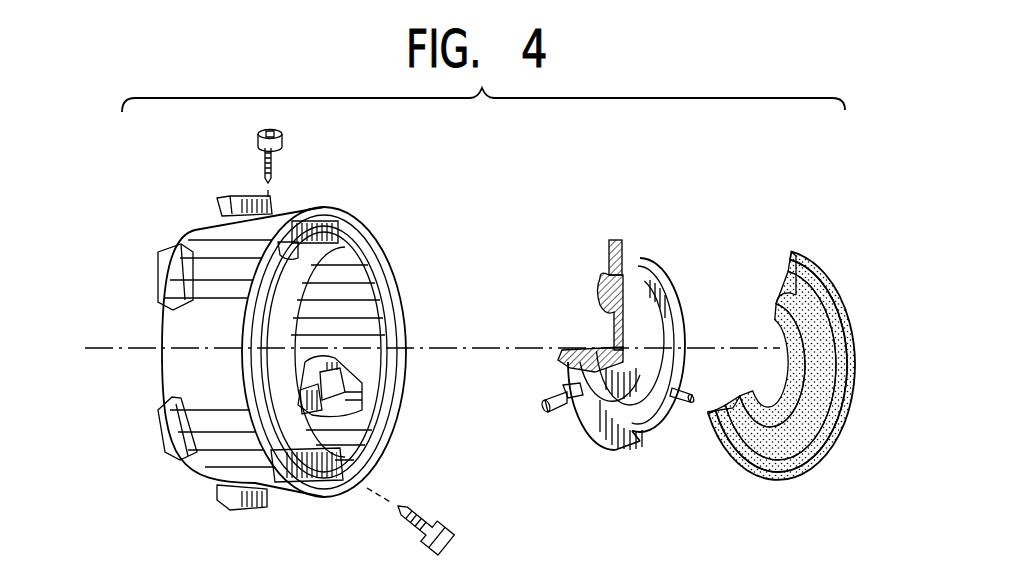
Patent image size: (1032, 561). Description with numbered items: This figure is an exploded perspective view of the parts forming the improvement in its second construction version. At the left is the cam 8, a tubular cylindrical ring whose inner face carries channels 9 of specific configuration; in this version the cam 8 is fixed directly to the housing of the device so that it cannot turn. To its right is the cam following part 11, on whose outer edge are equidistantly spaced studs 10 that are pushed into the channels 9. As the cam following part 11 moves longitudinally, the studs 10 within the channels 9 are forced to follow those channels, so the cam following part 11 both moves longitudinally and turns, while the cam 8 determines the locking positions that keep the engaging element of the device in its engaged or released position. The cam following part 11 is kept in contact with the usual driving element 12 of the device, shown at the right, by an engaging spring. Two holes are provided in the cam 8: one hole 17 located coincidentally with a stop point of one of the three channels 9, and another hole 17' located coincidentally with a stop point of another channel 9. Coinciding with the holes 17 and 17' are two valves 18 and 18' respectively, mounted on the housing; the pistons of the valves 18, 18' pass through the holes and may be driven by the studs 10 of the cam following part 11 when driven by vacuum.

The cam 8 is at (176, 318).
The channels 9 is at (350, 383).
The studs 10 is at (620, 236).
The cam following part 11 is at (663, 285).
The driving element 12 is at (809, 458).
The hole 17 is at (230, 180).
The hole 17' is at (290, 385).
The valve 18 is at (290, 164).
The valve 18' is at (412, 502).